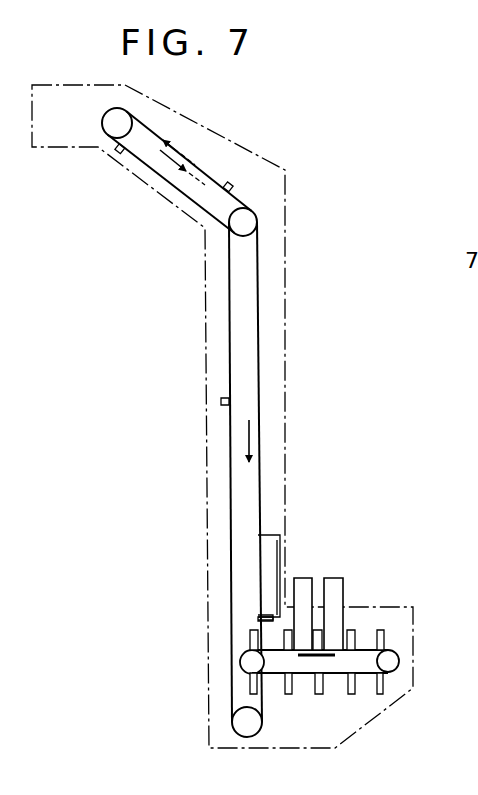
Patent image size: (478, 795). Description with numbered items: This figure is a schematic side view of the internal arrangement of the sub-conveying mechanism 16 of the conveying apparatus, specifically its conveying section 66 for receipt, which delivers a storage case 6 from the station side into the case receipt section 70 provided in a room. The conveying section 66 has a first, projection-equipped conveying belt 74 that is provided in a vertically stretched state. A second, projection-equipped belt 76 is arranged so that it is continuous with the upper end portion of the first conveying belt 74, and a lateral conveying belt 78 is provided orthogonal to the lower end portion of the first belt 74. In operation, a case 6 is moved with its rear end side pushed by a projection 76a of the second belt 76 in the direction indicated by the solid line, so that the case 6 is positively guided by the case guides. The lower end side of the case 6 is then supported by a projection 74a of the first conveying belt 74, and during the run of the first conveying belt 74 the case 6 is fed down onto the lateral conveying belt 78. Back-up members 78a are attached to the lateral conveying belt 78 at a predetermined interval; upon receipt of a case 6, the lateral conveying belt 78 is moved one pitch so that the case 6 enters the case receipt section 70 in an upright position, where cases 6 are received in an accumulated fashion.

The sub-conveying mechanism 16 is at (207, 440).
The conveying section for receipt 66 is at (288, 355).
The first projection-equipped conveying belt 74 is at (229, 310).
The projection of first conveying belt 74a is at (221, 402).
The second projection-equipped conveying belt 76 is at (191, 204).
The projection of second conveying belt 76a is at (119, 155).
The lateral conveying belt 78 is at (333, 674).
The back-up members 78a is at (386, 637).
The case receipt section 70 is at (356, 628).
The storage case 6 is at (333, 581).